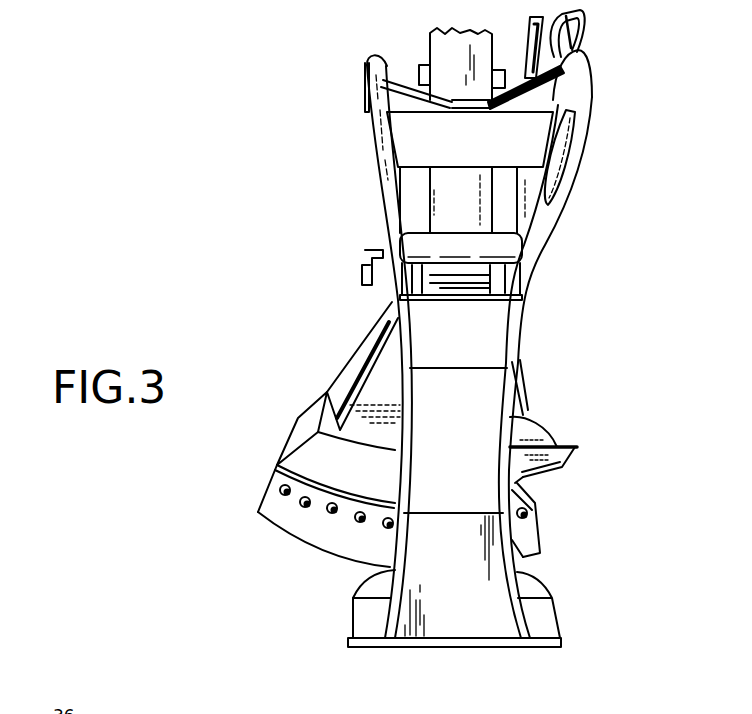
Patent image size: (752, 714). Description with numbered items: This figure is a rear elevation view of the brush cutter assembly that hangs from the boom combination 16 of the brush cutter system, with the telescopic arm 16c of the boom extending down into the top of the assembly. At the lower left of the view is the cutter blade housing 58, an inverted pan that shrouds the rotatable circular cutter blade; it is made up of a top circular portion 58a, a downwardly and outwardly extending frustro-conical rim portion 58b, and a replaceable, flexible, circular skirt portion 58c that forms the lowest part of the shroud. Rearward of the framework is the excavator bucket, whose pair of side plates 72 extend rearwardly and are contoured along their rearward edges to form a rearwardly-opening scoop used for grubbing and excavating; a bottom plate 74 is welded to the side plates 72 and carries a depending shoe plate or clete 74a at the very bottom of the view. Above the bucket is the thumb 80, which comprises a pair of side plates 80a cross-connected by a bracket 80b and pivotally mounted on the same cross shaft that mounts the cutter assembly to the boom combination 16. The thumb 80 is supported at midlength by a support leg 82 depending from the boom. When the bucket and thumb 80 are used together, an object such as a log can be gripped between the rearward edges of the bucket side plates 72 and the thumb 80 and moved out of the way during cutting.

The boom combination 16 is at (506, 246).
The longitudinally-telescopic arm 16c is at (460, 200).
The cutter blade housing 58 is at (287, 434).
The top circular portion 58a is at (333, 403).
The frustro-conical rim portion 58b is at (300, 420).
The circular skirt portion 58c is at (288, 520).
The side plates 72 is at (518, 316).
The bottom plate 74 is at (429, 648).
The shoe plate or clete 74a is at (562, 499).
The thumb 80 is at (469, 107).
The side plates 80a is at (368, 80).
The cross plate 80b is at (486, 152).
The support leg 82 is at (438, 47).